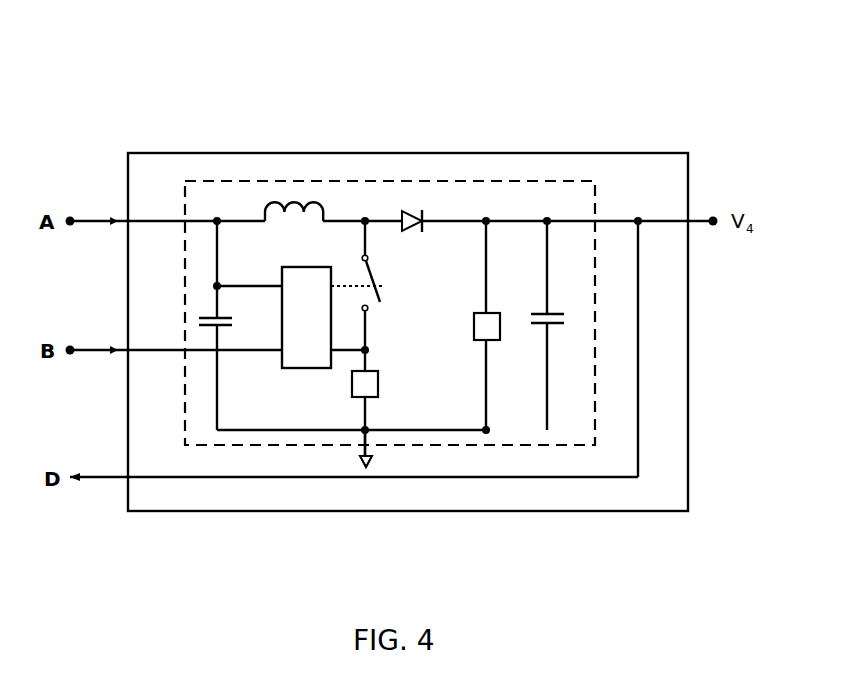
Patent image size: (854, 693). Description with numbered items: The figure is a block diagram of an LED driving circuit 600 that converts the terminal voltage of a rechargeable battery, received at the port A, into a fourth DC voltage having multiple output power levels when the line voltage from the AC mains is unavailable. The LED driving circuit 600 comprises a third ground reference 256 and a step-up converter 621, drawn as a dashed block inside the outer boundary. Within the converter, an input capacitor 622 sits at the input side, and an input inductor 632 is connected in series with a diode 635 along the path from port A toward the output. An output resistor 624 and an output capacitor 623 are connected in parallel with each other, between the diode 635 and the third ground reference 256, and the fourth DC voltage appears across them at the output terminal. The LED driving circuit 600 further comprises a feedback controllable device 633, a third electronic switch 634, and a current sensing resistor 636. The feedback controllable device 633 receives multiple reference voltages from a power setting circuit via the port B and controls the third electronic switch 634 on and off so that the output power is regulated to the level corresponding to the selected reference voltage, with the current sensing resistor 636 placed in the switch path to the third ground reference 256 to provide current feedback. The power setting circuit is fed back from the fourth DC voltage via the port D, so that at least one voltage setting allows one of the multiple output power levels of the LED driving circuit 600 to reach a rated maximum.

The LED driving circuit 600 is at (360, 153).
The step-up converter 621 is at (533, 181).
The input capacitor 622 is at (210, 324).
The output capacitor 623 is at (553, 313).
The output resistor 624 is at (488, 341).
The input inductor 632 is at (291, 203).
The feedback controllable device 633 is at (282, 267).
The third electronic switch 634 is at (383, 295).
The diode 635 is at (413, 211).
The current sensing resistor 636 is at (378, 397).
The third ground reference 256 is at (363, 469).